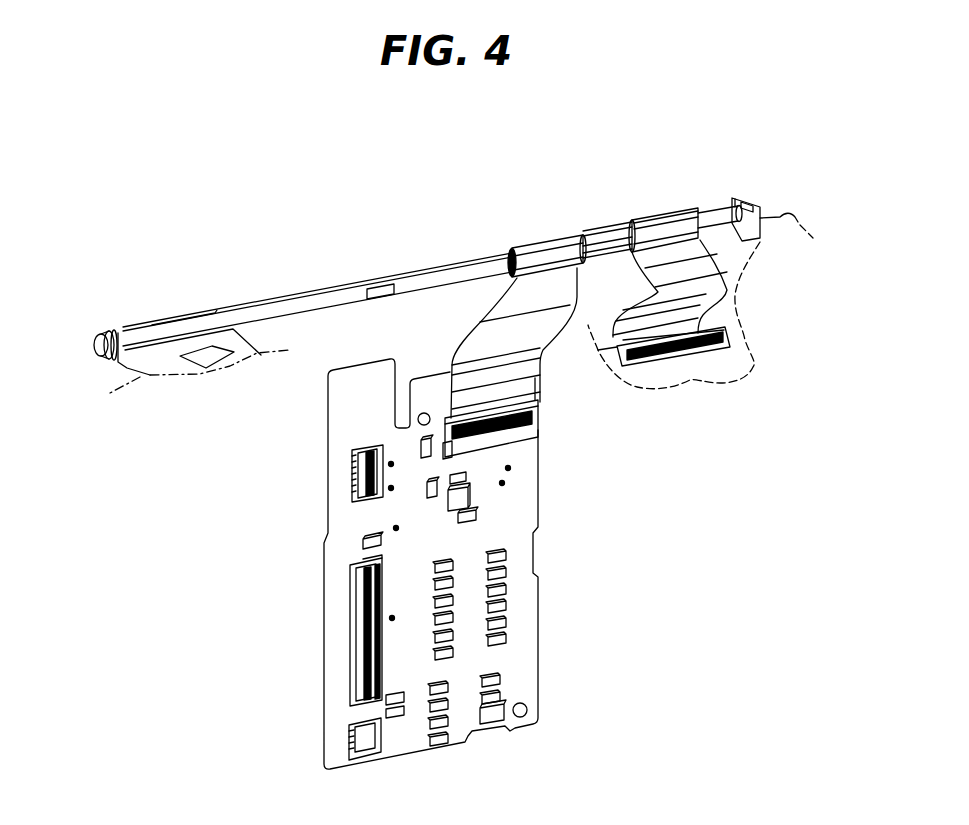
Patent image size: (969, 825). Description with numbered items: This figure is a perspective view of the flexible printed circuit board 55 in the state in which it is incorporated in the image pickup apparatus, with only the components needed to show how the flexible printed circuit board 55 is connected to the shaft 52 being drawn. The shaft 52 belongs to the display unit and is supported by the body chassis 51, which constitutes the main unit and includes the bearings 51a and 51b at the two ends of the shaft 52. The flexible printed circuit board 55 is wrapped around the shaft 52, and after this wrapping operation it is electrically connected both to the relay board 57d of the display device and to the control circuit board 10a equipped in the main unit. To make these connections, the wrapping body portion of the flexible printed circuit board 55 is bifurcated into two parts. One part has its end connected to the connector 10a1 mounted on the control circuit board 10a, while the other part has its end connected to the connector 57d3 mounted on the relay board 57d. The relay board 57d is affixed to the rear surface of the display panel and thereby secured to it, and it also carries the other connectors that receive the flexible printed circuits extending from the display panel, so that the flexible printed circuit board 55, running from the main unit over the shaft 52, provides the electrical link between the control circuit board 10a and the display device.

The control circuit board 10a is at (692, 368).
The connector 10a1 is at (727, 330).
The body chassis 51 is at (164, 360).
The bearing 51a is at (735, 196).
The bearing 51b is at (108, 327).
The shaft 52 is at (423, 277).
The flexible printed circuit board 55 is at (553, 246).
The relay board 57d is at (523, 581).
The connector 57d3 is at (540, 429).